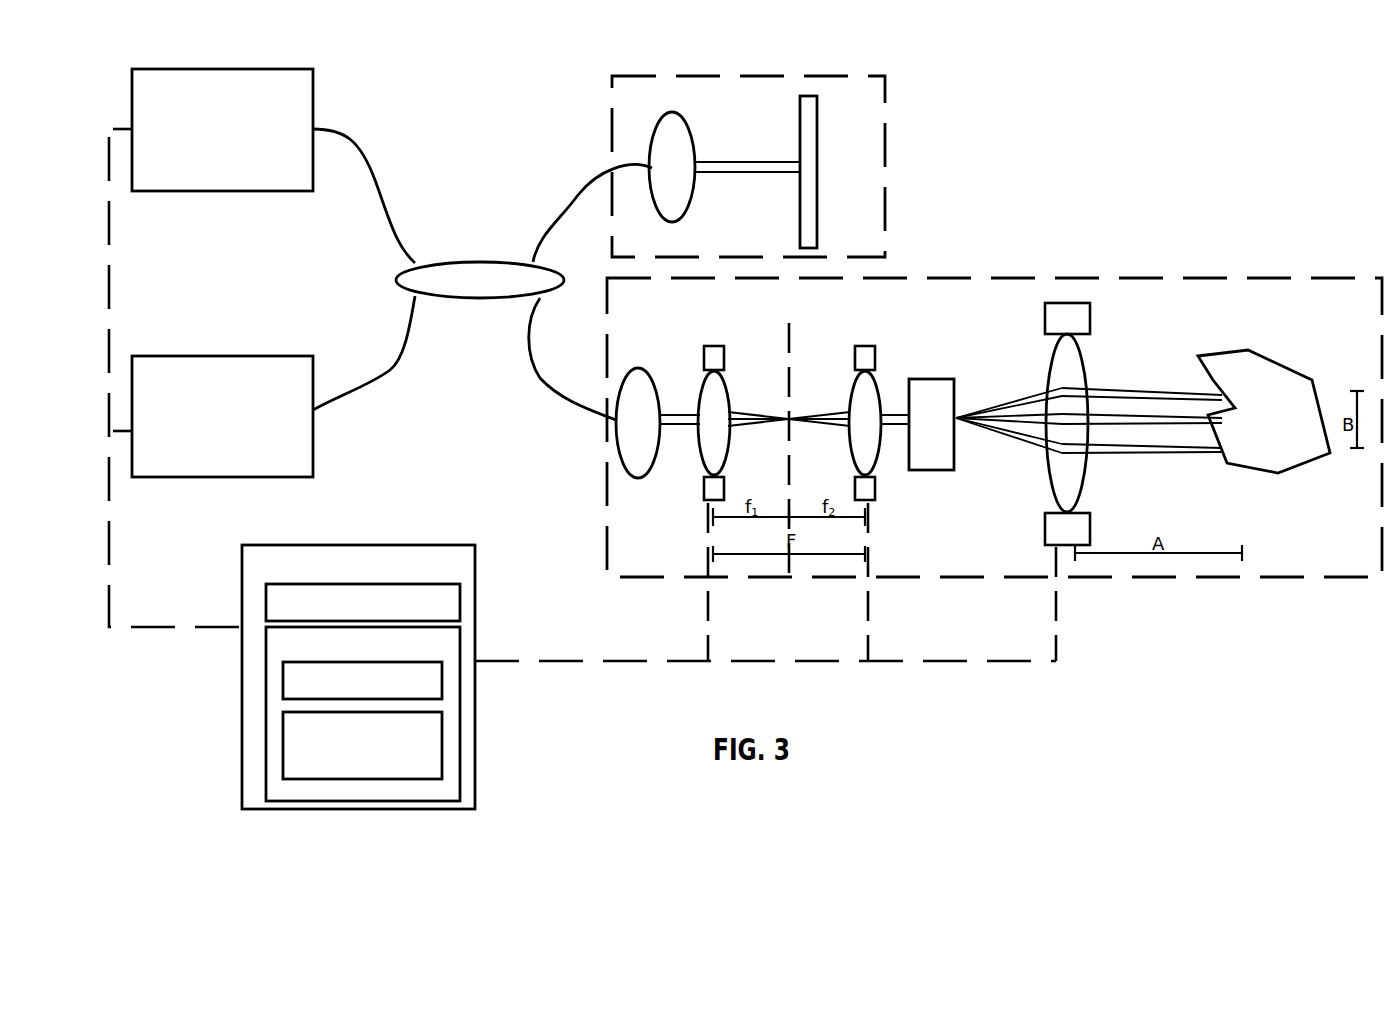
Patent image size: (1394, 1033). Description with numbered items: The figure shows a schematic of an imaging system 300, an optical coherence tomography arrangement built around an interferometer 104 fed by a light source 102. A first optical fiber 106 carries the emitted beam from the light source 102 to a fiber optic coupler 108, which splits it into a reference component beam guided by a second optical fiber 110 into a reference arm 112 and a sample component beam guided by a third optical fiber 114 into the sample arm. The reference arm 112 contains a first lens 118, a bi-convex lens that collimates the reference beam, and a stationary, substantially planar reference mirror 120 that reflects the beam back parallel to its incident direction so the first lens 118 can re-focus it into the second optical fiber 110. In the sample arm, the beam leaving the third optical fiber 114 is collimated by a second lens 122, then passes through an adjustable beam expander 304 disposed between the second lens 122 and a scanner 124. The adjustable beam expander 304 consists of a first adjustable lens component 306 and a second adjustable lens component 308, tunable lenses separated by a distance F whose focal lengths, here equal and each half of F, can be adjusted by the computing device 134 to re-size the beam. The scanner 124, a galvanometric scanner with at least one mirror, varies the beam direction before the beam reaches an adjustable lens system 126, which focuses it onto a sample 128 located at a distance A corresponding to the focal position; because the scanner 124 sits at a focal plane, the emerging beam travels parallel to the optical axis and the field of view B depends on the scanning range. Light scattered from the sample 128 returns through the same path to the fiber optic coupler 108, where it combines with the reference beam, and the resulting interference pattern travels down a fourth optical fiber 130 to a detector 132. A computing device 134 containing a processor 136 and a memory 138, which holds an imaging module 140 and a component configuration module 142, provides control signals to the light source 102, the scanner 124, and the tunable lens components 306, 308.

The light source 102 is at (313, 92).
The interferometer 104 is at (485, 124).
The first optical fiber 106 is at (353, 142).
The fiber optic coupler 108 is at (495, 262).
The second optical fiber 110 is at (558, 225).
The reference arm 112 is at (705, 75).
The third optical fiber 114 is at (550, 383).
The first lens 118 is at (690, 127).
The reference mirror 120 is at (820, 127).
The second lens 122 is at (667, 365).
The scanner 124 is at (960, 382).
The adjustable lens system 126 is at (1087, 362).
The sample 128 is at (1275, 363).
The fourth optical fiber 130 is at (402, 357).
The detector 132 is at (313, 455).
The computing device 134 is at (360, 677).
The processor 136 is at (460, 598).
The memory 138 is at (460, 701).
The imaging module 140 is at (283, 681).
The component configuration module 142 is at (283, 722).
The imaging system 300 is at (1000, 145).
The adjustable beam expander 304 is at (740, 320).
The first adjustable lens component 306 is at (727, 392).
The second adjustable lens component 308 is at (852, 392).